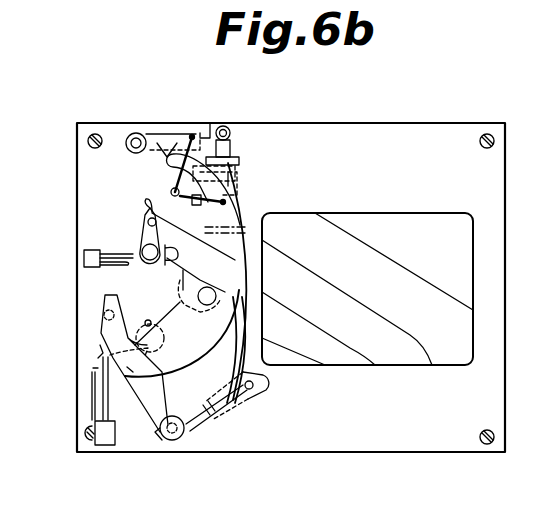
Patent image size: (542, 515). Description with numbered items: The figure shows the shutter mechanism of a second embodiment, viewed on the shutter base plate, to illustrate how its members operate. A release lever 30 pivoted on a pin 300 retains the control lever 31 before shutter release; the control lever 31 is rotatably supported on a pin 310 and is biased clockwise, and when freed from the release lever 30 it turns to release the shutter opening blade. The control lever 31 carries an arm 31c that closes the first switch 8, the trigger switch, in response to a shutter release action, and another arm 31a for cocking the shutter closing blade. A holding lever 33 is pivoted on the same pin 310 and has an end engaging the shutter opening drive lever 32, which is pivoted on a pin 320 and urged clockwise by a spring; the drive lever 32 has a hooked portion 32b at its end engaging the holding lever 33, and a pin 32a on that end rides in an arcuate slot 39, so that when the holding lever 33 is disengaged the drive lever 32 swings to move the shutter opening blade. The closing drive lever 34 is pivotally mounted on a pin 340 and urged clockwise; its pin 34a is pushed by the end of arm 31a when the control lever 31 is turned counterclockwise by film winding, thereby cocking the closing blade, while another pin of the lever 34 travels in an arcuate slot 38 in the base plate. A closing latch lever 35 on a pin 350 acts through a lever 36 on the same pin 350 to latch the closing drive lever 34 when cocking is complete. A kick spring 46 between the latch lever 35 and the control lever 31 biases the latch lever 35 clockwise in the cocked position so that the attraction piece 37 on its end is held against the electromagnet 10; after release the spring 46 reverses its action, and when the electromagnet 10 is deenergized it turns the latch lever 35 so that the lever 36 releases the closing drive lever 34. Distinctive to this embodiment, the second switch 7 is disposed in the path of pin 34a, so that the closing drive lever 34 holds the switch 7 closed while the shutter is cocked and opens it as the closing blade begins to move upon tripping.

The second switch 7 is at (84, 258).
The first switch 8 is at (104, 447).
The electromagnet 10 is at (233, 186).
The release lever 30 is at (248, 397).
The pin 300 is at (254, 386).
The control lever 31 is at (197, 338).
The arm 31a is at (172, 181).
The arm 31c is at (100, 298).
The pin 310 is at (216, 296).
The shutter opening drive lever 32 is at (134, 369).
The pin 32a is at (181, 441).
The hooked portion 32b is at (127, 367).
The pin 320 is at (193, 366).
The holding lever 33 is at (153, 310).
The closing drive lever 34 is at (145, 233).
The pin 34a is at (147, 207).
The pin 340 is at (147, 261).
The closing latch lever 35 is at (205, 131).
The pin 350 is at (130, 136).
The lever 36 is at (152, 131).
The attraction piece 37 is at (231, 145).
The arcuate slot 38 is at (237, 229).
The arcuate slot 39 is at (198, 427).
The kick spring 46 is at (192, 134).